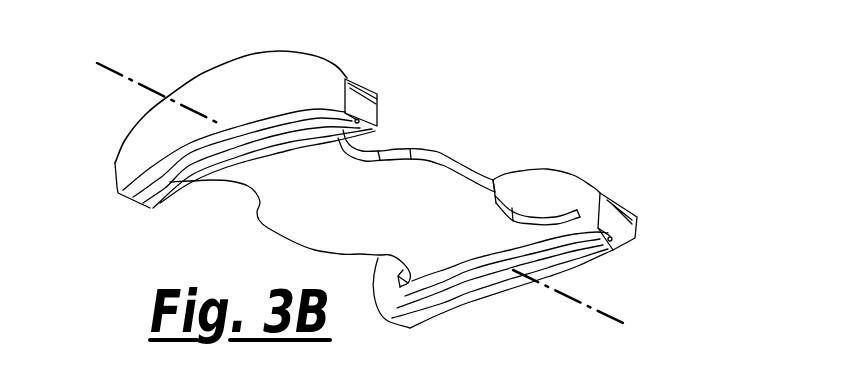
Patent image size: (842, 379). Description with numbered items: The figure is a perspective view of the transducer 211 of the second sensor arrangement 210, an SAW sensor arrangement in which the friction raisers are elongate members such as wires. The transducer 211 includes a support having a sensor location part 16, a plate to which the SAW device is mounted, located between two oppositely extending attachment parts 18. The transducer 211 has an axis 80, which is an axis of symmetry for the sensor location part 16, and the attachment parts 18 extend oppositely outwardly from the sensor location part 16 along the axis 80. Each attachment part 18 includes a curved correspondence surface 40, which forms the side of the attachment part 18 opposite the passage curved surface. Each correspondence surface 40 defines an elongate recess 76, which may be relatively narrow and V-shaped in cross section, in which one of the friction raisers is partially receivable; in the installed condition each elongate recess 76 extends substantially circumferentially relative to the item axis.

The sensor location part 16 is at (397, 143).
The attachment part 18 is at (213, 80).
The correspondence surface 40 is at (137, 195).
The elongate recess 76 is at (172, 182).
The axis 80 is at (96, 63).
The second sensor arrangement 210 is at (590, 100).
The transducer 211 is at (557, 170).